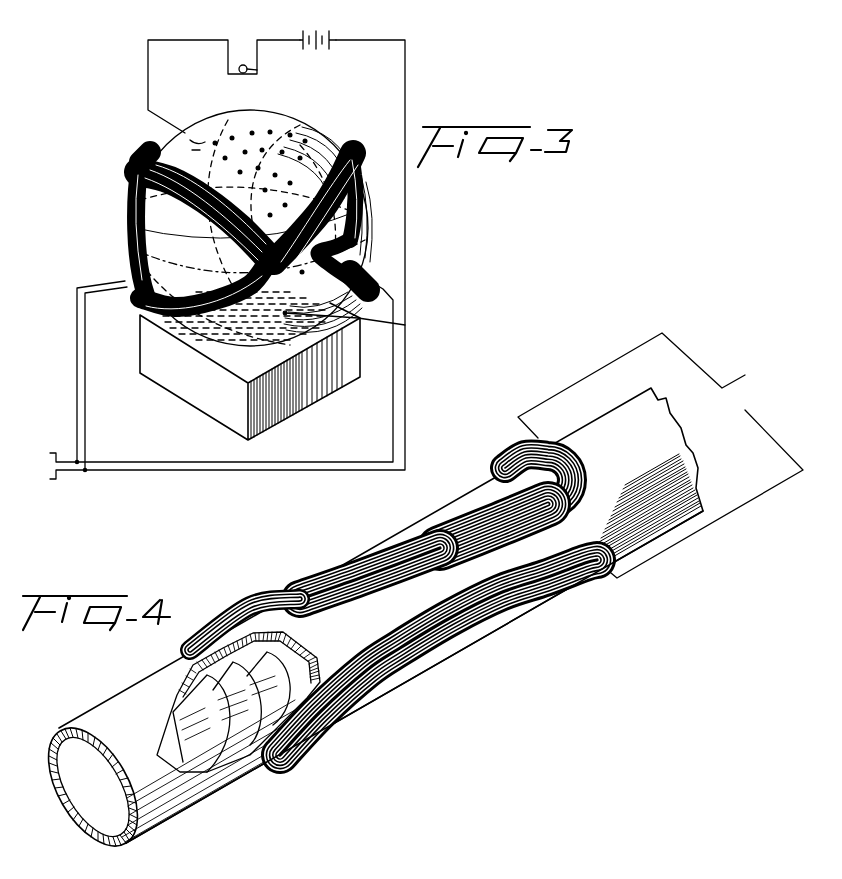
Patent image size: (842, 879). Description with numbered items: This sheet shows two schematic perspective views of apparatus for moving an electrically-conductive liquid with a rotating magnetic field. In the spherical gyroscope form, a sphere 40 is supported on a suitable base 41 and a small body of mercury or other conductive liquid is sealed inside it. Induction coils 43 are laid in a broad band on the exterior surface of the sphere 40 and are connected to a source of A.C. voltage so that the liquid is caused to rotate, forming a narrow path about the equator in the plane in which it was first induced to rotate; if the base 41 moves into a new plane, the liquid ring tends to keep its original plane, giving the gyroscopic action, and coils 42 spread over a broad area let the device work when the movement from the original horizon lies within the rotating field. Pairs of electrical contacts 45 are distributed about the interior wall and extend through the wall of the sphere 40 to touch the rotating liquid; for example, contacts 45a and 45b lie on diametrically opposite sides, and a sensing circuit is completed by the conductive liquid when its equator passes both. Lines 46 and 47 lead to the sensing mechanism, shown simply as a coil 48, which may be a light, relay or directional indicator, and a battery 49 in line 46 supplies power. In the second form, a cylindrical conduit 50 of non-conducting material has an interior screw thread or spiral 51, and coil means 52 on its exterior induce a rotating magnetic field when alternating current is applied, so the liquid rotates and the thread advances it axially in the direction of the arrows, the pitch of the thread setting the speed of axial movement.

In FIG. 3, the sphere 40 is at (198, 145).
In FIG. 3, the base 41 is at (313, 393).
In FIG. 3, the coils 42 is at (200, 355).
In FIG. 3, the induction coils 43 is at (130, 163).
In FIG. 3, the pairs of electrical contacts 45 is at (252, 113).
In FIG. 3, the contact 45a is at (287, 315).
In FIG. 3, the contact 45b is at (197, 143).
In FIG. 3, the line 46 is at (407, 82).
In FIG. 3, the line 47 is at (146, 64).
In FIG. 3, the coil 48 is at (257, 70).
In FIG. 3, the battery 49 is at (330, 52).
In FIG. 4, the cylindrical conduit 50 is at (702, 466).
In FIG. 4, the interior screw thread or spiral 51 is at (263, 730).
In FIG. 4, the coil means 52 is at (260, 598).